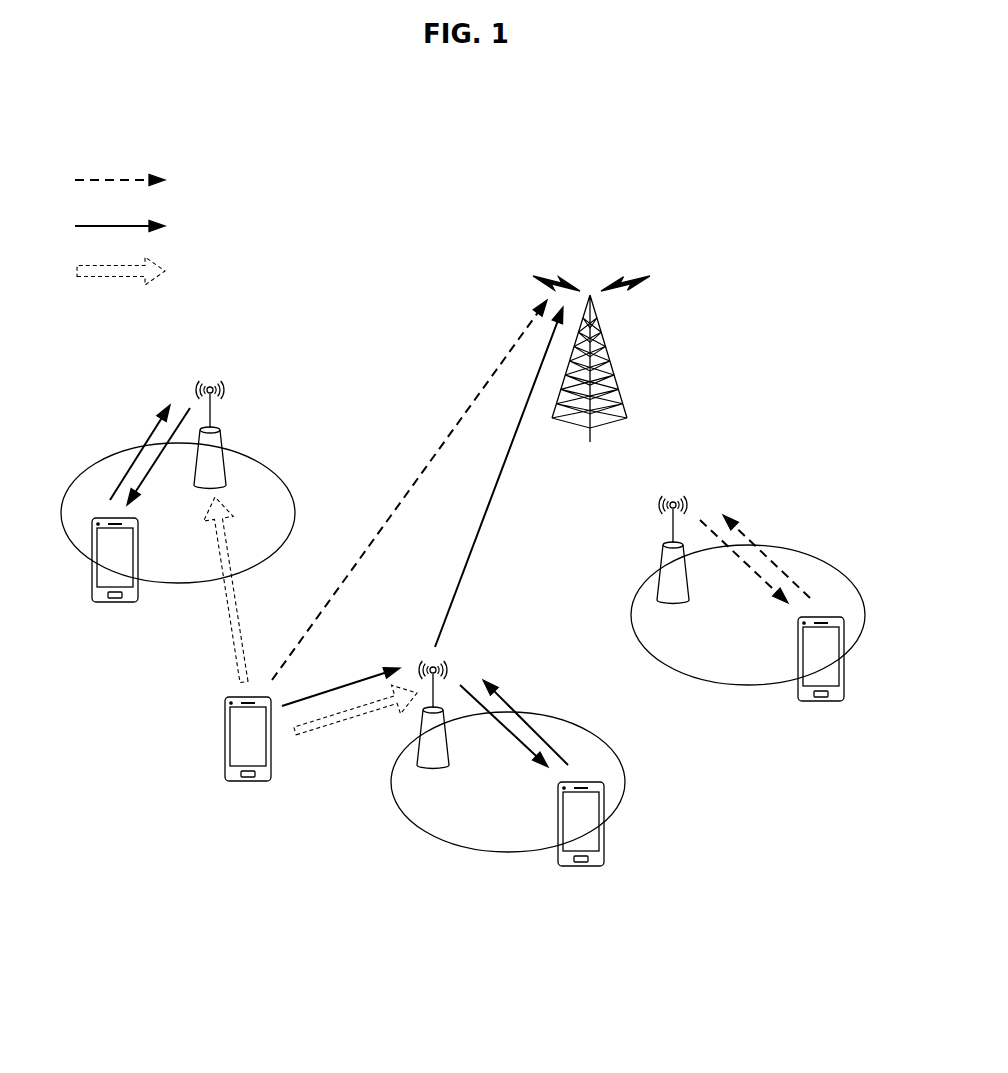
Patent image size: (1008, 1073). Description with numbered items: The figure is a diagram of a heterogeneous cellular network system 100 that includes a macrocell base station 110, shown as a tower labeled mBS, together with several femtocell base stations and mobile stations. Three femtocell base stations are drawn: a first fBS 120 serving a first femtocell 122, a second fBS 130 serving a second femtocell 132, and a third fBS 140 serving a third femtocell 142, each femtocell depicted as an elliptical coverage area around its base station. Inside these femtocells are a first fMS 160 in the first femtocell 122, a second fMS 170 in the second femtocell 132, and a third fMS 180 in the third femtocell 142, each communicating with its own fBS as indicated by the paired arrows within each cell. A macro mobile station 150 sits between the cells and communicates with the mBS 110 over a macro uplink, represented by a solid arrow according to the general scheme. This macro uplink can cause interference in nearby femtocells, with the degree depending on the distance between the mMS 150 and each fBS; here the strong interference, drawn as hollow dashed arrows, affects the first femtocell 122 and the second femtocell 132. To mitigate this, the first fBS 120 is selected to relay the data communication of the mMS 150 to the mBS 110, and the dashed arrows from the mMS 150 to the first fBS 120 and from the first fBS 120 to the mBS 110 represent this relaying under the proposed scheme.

The heterogeneous cellular network system 100 is at (500, 106).
The macrocell base station 110 is at (603, 342).
The first femtocell base station 120 is at (424, 762).
The first femtocell 122 is at (547, 712).
The second femtocell base station 130 is at (226, 445).
The second femtocell 132 is at (286, 478).
The third femtocell base station 140 is at (662, 556).
The third femtocell 142 is at (788, 547).
The macro mobile station 150 is at (247, 781).
The first femto mobile station 160 is at (580, 866).
The second femto mobile station 170 is at (115, 602).
The third femto mobile station 180 is at (820, 701).